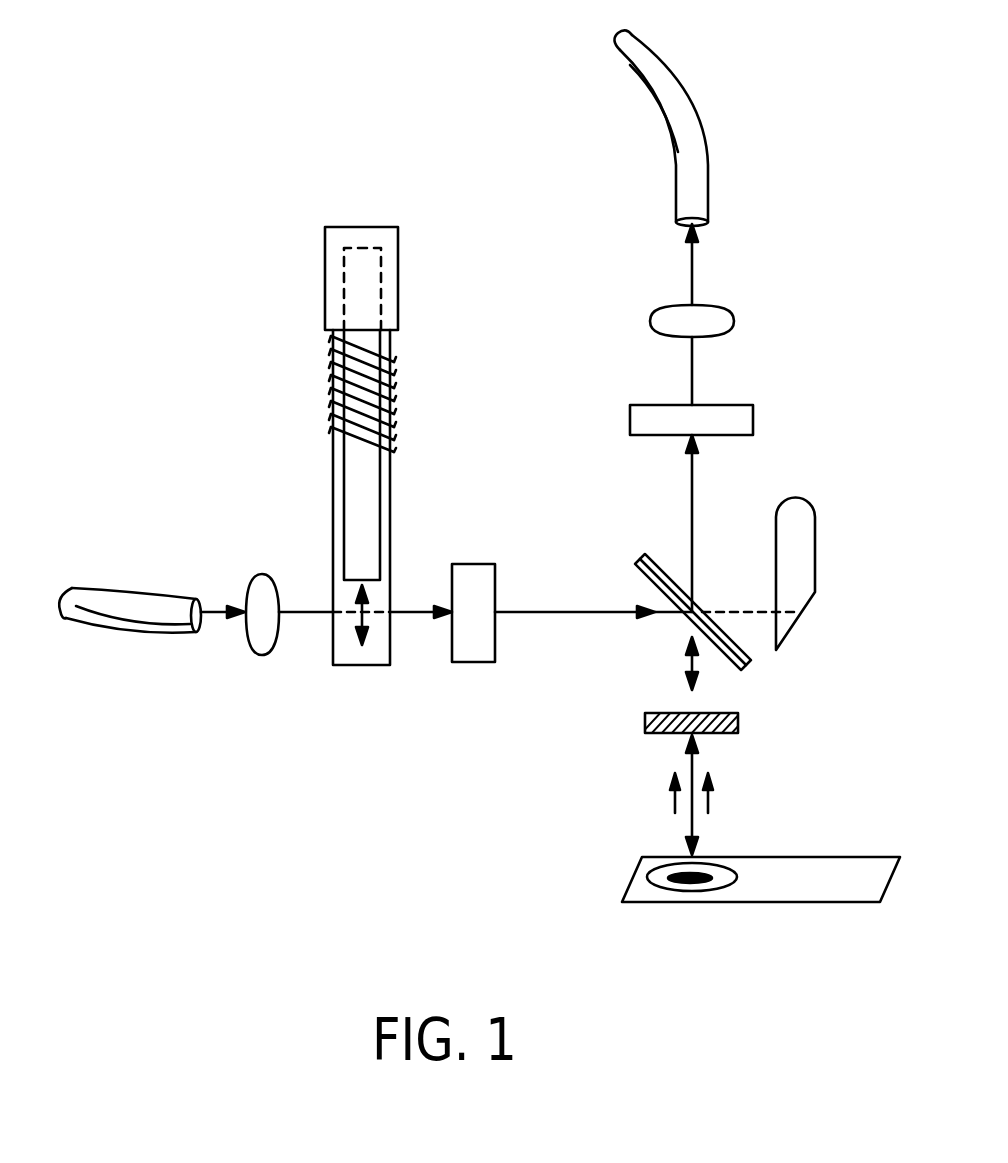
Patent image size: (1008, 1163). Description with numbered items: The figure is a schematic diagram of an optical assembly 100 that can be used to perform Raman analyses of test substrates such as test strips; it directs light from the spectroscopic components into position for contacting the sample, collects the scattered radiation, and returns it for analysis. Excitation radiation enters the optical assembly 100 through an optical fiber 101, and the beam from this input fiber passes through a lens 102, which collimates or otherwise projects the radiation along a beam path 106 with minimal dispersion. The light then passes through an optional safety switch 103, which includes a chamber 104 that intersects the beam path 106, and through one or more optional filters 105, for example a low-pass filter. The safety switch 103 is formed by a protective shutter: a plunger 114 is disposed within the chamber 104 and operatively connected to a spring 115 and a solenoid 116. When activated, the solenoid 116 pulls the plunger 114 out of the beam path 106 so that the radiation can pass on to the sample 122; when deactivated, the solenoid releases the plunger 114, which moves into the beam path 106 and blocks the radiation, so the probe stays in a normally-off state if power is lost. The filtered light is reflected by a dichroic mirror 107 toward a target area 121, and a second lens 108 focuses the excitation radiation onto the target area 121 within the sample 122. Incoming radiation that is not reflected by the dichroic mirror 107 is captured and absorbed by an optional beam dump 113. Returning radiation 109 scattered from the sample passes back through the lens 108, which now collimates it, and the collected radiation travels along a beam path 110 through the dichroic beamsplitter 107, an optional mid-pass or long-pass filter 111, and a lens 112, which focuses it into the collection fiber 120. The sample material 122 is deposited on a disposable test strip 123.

The optical assembly 100 is at (128, 752).
The optical fiber 101 is at (128, 590).
The lens 102 is at (262, 655).
The safety switch 103 is at (338, 502).
The chamber 104 is at (362, 665).
The filter 105 is at (475, 563).
The beam path 106 is at (557, 610).
The dichroic mirror 107 is at (730, 665).
The second lens 108 is at (645, 723).
The returning radiation 109 is at (672, 805).
The beam path 110 is at (692, 500).
The filter 111 is at (753, 420).
The lens 112 is at (735, 321).
The beam dump 113 is at (817, 547).
The plunger 114 is at (342, 462).
The spring 115 is at (396, 355).
The solenoid 116 is at (327, 241).
The collection fiber 120 is at (712, 182).
The target area 121 is at (723, 880).
The sample 122 is at (655, 878).
The test strip 123 is at (862, 872).